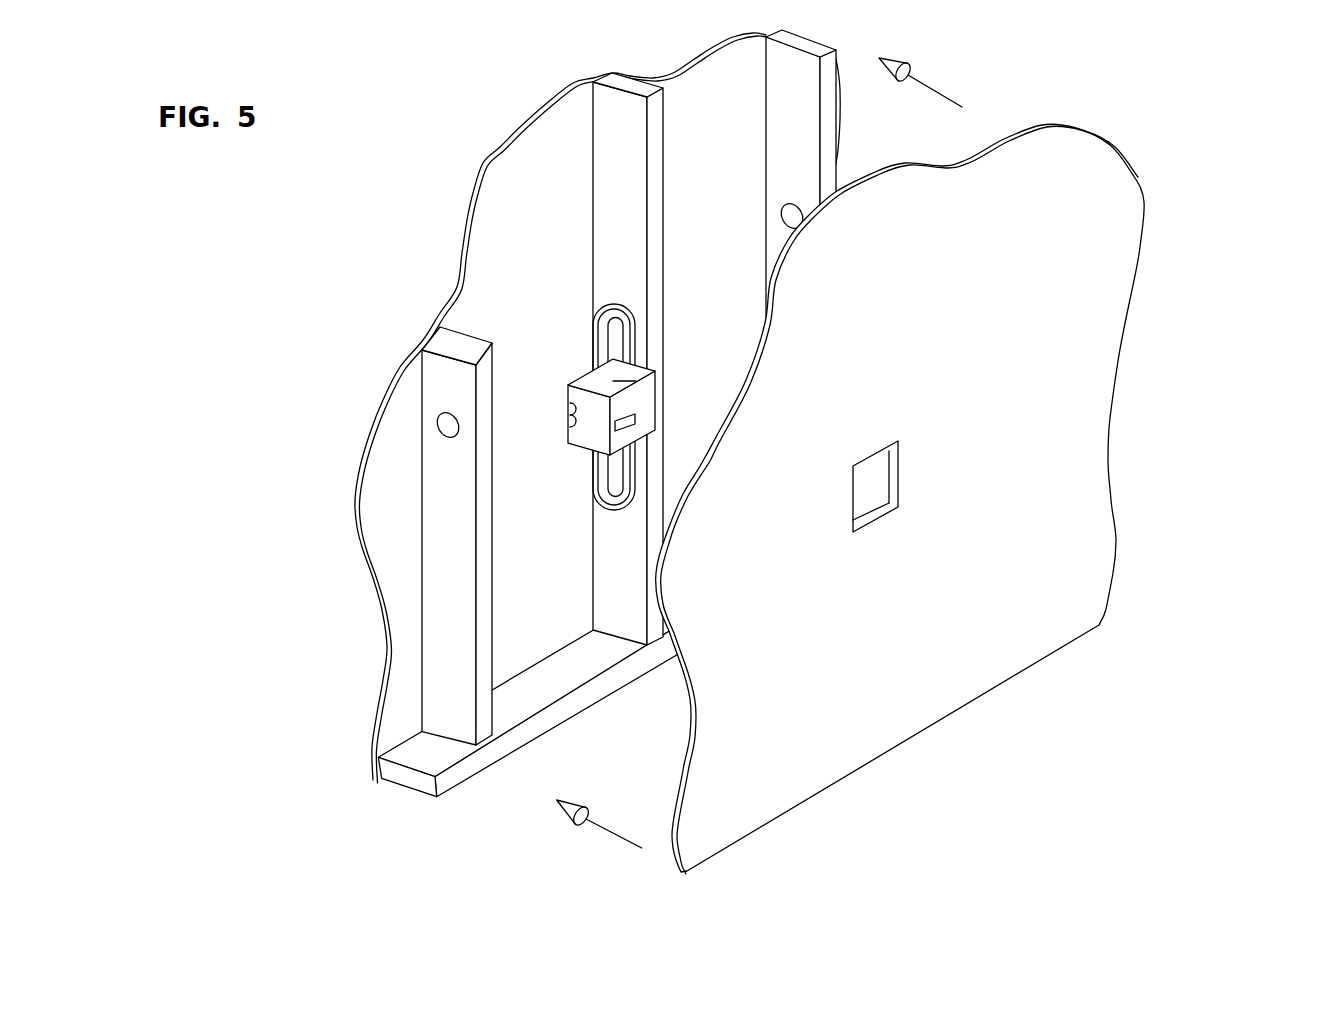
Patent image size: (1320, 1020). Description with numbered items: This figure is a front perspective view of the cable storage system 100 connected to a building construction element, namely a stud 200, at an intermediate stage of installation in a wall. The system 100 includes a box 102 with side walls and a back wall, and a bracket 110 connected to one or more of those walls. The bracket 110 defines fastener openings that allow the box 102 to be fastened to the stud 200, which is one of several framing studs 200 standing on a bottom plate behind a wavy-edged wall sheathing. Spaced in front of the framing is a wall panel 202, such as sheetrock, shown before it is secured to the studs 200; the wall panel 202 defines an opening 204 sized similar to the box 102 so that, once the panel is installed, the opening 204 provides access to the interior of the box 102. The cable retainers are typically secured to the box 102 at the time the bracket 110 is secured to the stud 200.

The cable storage system 100 is at (606, 408).
The box 102 is at (582, 435).
The bracket 110 is at (634, 388).
The stud 200 is at (618, 118).
The wall panel 202 is at (933, 499).
The opening 204 is at (853, 494).